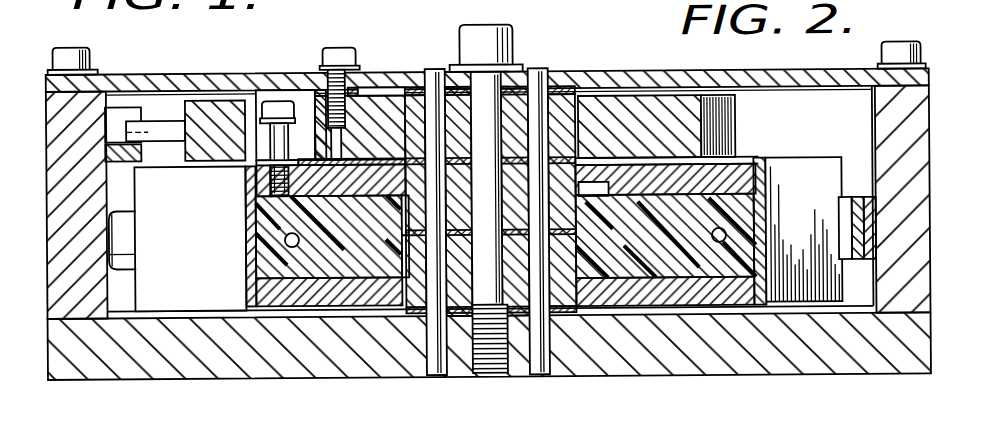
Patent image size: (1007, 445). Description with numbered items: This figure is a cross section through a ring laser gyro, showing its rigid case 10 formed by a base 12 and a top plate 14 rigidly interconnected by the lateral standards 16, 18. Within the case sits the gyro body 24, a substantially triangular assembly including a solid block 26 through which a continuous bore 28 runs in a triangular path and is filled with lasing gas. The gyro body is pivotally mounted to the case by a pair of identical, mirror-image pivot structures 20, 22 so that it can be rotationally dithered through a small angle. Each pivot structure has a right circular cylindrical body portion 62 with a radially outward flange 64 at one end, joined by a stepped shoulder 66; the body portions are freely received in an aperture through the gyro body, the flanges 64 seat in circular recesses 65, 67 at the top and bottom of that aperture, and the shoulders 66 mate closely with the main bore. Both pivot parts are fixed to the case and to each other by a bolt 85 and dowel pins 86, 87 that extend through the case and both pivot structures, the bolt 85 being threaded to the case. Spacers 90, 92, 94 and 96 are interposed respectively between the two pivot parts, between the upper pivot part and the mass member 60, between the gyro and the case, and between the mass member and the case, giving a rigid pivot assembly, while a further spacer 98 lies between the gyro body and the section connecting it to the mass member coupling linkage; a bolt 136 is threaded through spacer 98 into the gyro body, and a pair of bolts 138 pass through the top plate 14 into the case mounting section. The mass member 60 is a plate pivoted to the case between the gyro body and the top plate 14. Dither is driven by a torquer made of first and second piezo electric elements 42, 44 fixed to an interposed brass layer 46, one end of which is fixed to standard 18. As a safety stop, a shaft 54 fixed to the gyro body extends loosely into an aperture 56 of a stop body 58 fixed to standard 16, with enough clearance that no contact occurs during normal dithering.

The rigid case 10 is at (40, 66).
The base 12 is at (172, 372).
The top plate 14 is at (162, 80).
The lateral standard 16 is at (122, 197).
The lateral standard 18 is at (880, 114).
The pivot structure 20 is at (402, 212).
The pivot structure 22 is at (406, 264).
The gyro body 24 is at (775, 161).
The solid block 26 is at (238, 266).
The continuous bore 28 is at (286, 241).
The piezo electric element 42 is at (872, 213).
The piezo electric element 44 is at (846, 214).
The brass layer 46 is at (868, 247).
The stop shaft 54 is at (148, 142).
The aperture 56 is at (140, 118).
The stop body 58 is at (108, 154).
The mass member 60 is at (735, 130).
The cylindrical body portion 62 is at (582, 240).
The flange 64 is at (612, 182).
The circular recess 65 is at (360, 185).
The stepped shoulder 66 is at (592, 208).
The circular recess 67 is at (367, 297).
The bolt 85 is at (470, 36).
The dowel pin 86 is at (440, 58).
The dowel pin 87 is at (545, 80).
The spacer 90 is at (406, 240).
The spacer 92 is at (410, 166).
The spacer 94 is at (410, 322).
The spacer 96 is at (400, 92).
The spacer 98 is at (262, 178).
The bolt 136 is at (278, 104).
The bolt 138 is at (334, 70).